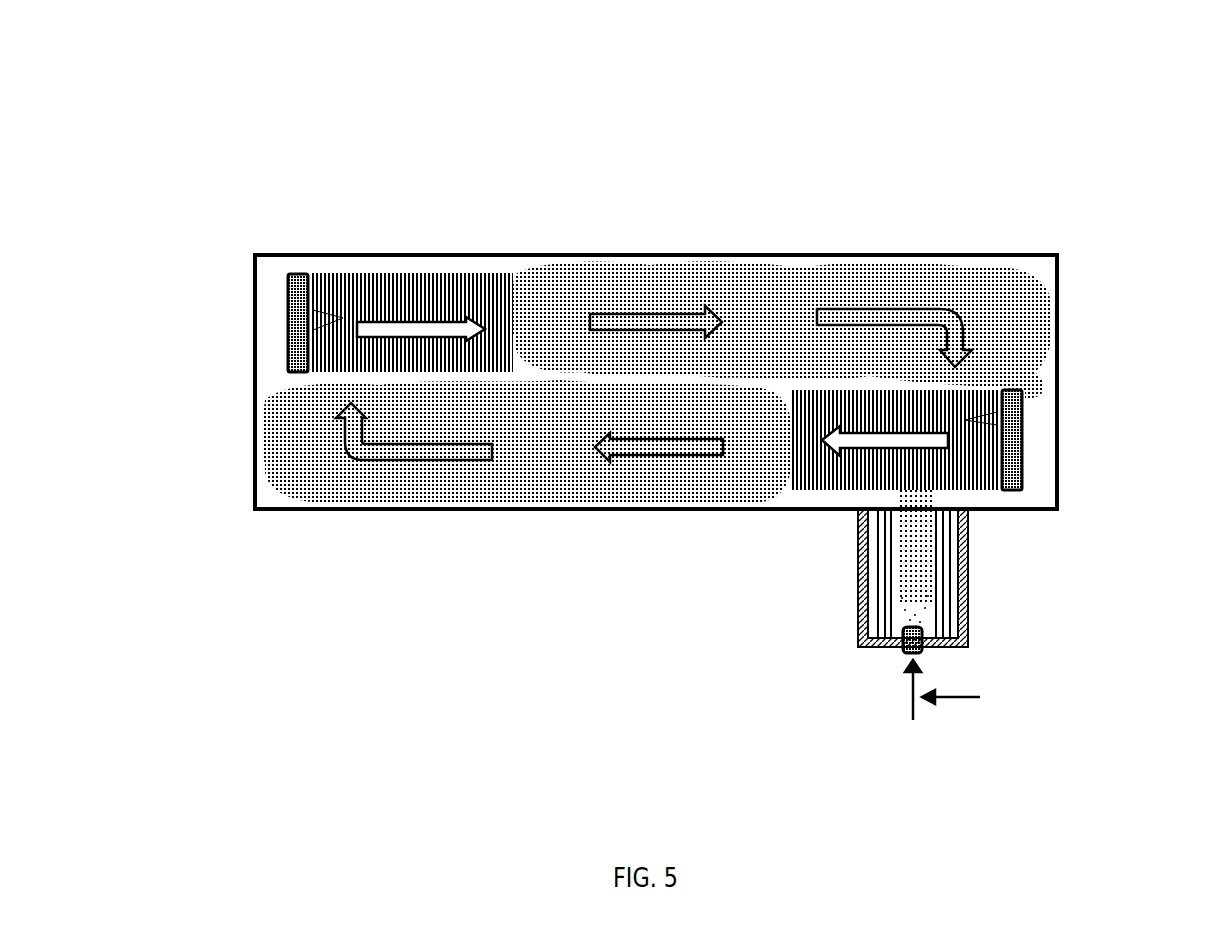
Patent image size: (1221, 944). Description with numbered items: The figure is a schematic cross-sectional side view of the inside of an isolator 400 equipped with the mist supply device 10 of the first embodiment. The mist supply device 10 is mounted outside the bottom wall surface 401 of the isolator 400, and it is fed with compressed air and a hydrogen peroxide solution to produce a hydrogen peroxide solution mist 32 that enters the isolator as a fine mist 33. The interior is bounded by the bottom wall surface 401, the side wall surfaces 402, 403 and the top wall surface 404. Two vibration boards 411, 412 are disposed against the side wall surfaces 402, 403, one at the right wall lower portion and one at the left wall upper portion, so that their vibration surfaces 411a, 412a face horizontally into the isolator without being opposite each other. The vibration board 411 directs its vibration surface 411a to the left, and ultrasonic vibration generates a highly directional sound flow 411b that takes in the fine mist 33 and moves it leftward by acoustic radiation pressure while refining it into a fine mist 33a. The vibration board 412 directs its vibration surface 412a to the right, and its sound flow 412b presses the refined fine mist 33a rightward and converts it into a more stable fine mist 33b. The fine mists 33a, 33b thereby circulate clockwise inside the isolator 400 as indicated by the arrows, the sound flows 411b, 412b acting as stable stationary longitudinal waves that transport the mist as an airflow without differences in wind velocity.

The isolator 400 is at (384, 166).
The bottom wall surface 401 is at (385, 510).
The side wall surface 402 is at (1055, 312).
The side wall surface 403 is at (255, 438).
The wall surface 404 is at (575, 255).
The vibration board 411 is at (1022, 400).
The vibration surface 411a is at (1022, 440).
The sound flow 411b is at (868, 410).
The vibration board 412 is at (287, 352).
The vibration surface 412a is at (310, 304).
The sound flow 412b is at (440, 292).
The fine mist 33 is at (860, 545).
The fine mist 33a is at (562, 470).
The fine mist 33b is at (765, 305).
The mist supply device 10 is at (860, 575).
The hydrogen peroxide solution mist 32 is at (860, 620).